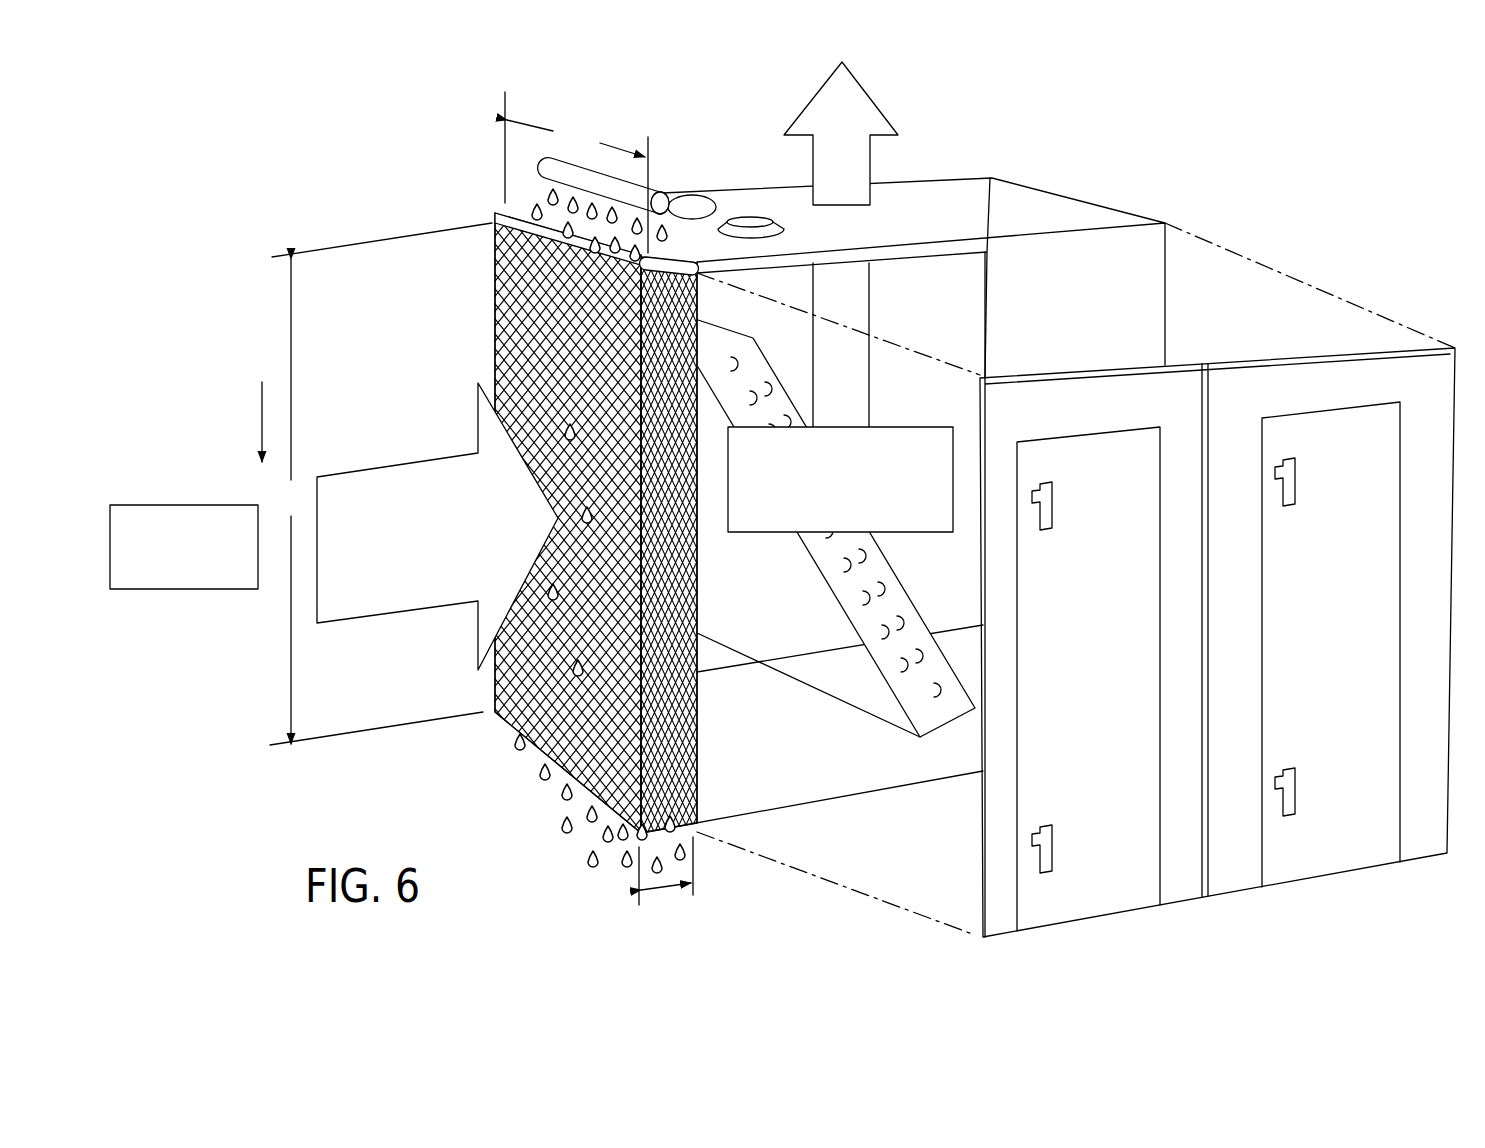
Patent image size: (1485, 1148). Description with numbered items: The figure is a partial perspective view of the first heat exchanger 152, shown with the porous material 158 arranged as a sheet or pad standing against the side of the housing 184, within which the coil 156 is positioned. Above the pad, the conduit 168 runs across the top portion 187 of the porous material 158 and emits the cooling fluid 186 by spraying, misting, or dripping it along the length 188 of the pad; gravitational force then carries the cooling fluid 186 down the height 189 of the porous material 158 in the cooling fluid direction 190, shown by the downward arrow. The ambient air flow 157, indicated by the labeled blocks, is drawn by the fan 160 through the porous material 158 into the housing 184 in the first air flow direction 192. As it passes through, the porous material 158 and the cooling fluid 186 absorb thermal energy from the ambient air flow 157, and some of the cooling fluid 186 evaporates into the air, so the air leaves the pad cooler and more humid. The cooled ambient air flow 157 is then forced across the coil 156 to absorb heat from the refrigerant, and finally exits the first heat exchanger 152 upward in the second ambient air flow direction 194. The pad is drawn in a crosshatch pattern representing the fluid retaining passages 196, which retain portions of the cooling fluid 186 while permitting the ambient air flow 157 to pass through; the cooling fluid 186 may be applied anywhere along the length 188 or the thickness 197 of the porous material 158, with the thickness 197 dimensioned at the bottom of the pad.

The first heat exchanger 152 is at (1262, 166).
The coil 156 is at (880, 658).
The ambient air flow 157 is at (168, 505).
The porous material 158 is at (505, 322).
The fan 160 is at (703, 205).
The conduit 168 is at (660, 185).
The housing 184 is at (1028, 203).
The cooling fluid 186 is at (496, 242).
The top portion 187 is at (502, 212).
The length 188 is at (576, 172).
The height 189 is at (381, 484).
The cooling fluid direction 190 is at (261, 418).
The first air flow direction 192 is at (395, 465).
The second ambient air flow direction 194 is at (870, 170).
The fluid retaining passages 196 is at (697, 733).
The thickness 197 is at (666, 888).